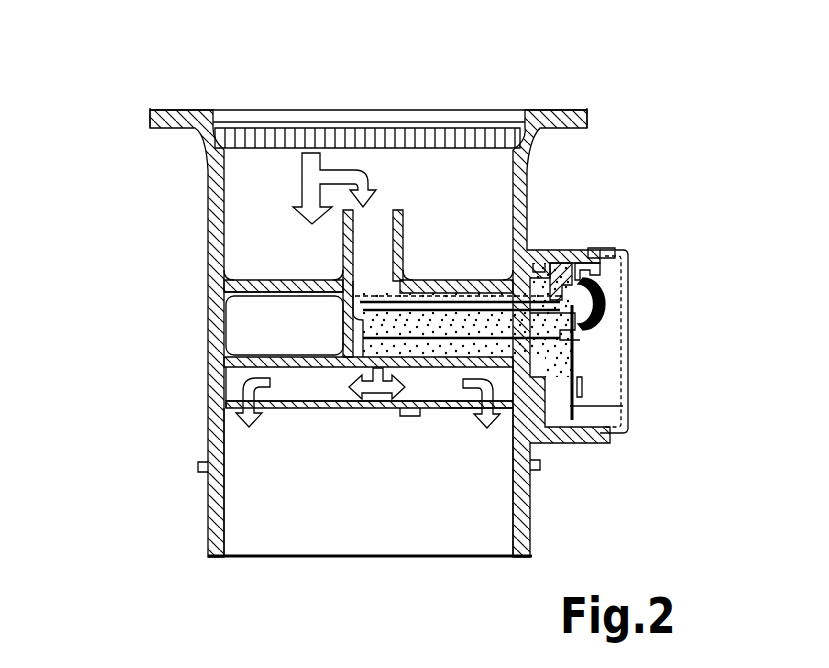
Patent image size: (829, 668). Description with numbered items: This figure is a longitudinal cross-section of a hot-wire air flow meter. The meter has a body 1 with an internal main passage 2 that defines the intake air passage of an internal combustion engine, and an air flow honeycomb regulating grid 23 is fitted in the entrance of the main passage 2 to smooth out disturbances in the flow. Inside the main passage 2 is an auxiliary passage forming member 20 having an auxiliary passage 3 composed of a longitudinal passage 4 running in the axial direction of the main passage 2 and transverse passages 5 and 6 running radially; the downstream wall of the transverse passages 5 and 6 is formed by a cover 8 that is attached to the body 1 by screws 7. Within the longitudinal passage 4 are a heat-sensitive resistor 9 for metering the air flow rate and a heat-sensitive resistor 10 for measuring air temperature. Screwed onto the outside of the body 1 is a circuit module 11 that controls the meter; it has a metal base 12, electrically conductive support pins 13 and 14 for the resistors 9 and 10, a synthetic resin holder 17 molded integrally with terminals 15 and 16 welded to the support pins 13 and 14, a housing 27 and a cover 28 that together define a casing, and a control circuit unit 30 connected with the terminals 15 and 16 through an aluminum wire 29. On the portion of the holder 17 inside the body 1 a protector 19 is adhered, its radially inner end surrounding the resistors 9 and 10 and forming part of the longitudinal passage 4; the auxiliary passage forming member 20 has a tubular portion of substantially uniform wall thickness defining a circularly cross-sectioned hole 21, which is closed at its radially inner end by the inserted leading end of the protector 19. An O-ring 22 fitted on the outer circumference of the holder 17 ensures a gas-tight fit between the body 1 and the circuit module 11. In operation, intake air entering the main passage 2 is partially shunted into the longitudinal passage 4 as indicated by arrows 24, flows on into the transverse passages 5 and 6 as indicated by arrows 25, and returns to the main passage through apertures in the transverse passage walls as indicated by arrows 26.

The body 1 is at (170, 118).
The main passage 2 is at (226, 178).
The auxiliary passage 3 is at (450, 300).
The longitudinal passage 4 is at (358, 242).
The transverse passage 5 is at (272, 420).
The transverse passage 6 is at (463, 400).
The screws 7 is at (408, 418).
The cover 8 is at (447, 405).
The heat-sensitive resistor 9 is at (362, 310).
The heat-sensitive resistor 10 is at (360, 388).
The circuit module 11 is at (627, 263).
The base 12 is at (560, 262).
The support pin 13 is at (470, 318).
The support pin 14 is at (577, 360).
The terminal 15 is at (590, 275).
The terminal 16 is at (578, 335).
The synthetic resin holder 17 is at (503, 300).
The protector 19 is at (240, 292).
The auxiliary passage forming member 20 is at (338, 316).
The hole 21 is at (247, 322).
The O-ring 22 is at (532, 256).
The air flow honeycomb regulating grid 23 is at (234, 122).
The arrows 24 is at (296, 122).
The arrows 25 is at (343, 394).
The arrows 26 is at (237, 383).
The housing 27 is at (593, 253).
The cover 28 is at (625, 327).
The aluminum wire 29 is at (590, 302).
The control circuit unit 30 is at (580, 407).